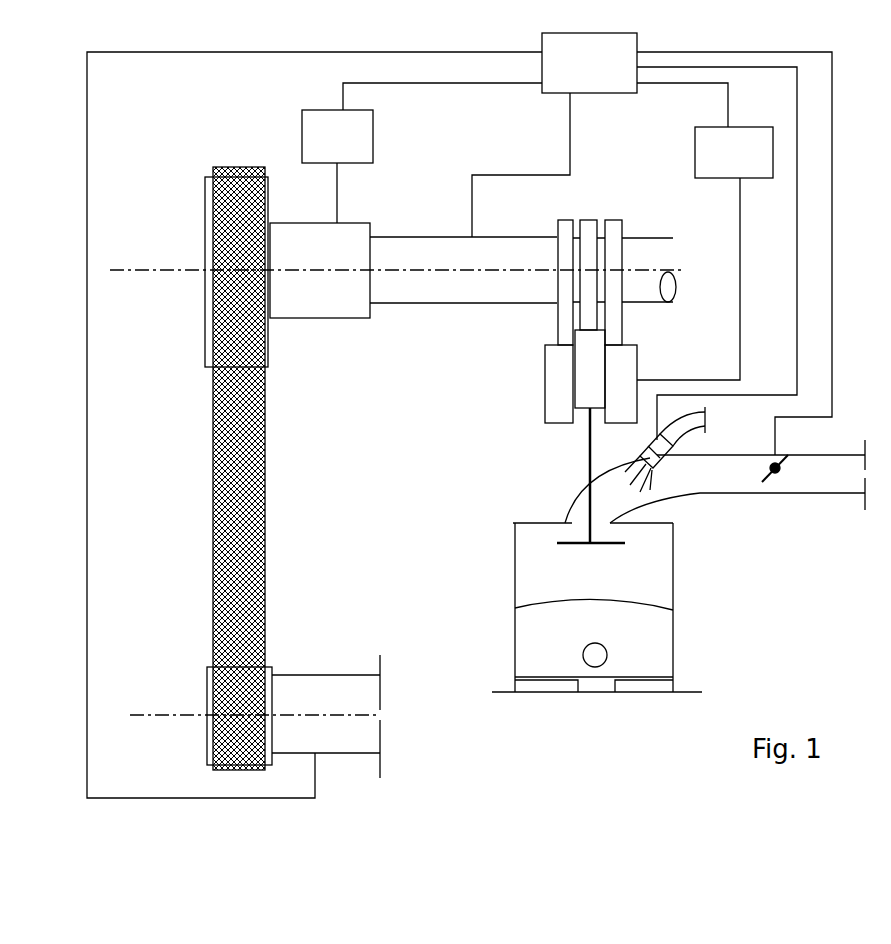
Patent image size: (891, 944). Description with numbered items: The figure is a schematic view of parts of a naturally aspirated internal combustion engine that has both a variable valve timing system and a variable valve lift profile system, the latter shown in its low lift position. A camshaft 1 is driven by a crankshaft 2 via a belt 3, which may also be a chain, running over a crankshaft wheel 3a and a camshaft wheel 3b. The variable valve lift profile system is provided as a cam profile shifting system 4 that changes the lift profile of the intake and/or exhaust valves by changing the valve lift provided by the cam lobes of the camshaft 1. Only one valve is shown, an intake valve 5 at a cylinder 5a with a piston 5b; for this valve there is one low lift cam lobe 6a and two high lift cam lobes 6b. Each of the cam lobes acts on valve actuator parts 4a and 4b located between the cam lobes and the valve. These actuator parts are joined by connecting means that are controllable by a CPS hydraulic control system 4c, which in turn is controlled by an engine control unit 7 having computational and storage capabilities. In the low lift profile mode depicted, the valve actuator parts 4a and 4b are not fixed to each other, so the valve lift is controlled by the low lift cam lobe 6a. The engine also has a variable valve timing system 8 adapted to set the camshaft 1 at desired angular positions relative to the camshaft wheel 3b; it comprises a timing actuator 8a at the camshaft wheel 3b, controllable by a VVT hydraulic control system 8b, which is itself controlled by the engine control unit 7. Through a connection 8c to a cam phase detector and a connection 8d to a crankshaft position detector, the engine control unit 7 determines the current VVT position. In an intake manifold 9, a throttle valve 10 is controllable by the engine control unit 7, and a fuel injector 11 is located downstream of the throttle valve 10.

The camshaft 1 is at (460, 293).
The crankshaft 2 is at (322, 687).
The belt 3 is at (267, 543).
The crankshaft wheel 3a is at (205, 683).
The camshaft wheel 3b is at (203, 227).
The cam profile shifting system 4 is at (505, 402).
The valve actuator part 4a is at (580, 413).
The valve actuator part 4b is at (543, 367).
The CPS hydraulic control system 4c is at (718, 166).
The intake valve 5 is at (570, 547).
The cylinder 5a is at (668, 548).
The piston 5b is at (662, 662).
The low lift cam lobe 6a is at (588, 222).
The high lift cam lobes 6b is at (555, 230).
The engine control unit 7 is at (580, 77).
The variable valve timing system 8 is at (330, 348).
The timing actuator 8a is at (303, 284).
The VVT hydraulic control system 8b is at (322, 150).
The connection to cam phase detector 8c is at (567, 121).
The connection to crankshaft position detector 8d is at (208, 53).
The intake manifold 9 is at (713, 487).
The throttle valve 10 is at (778, 477).
The fuel injector 11 is at (685, 445).